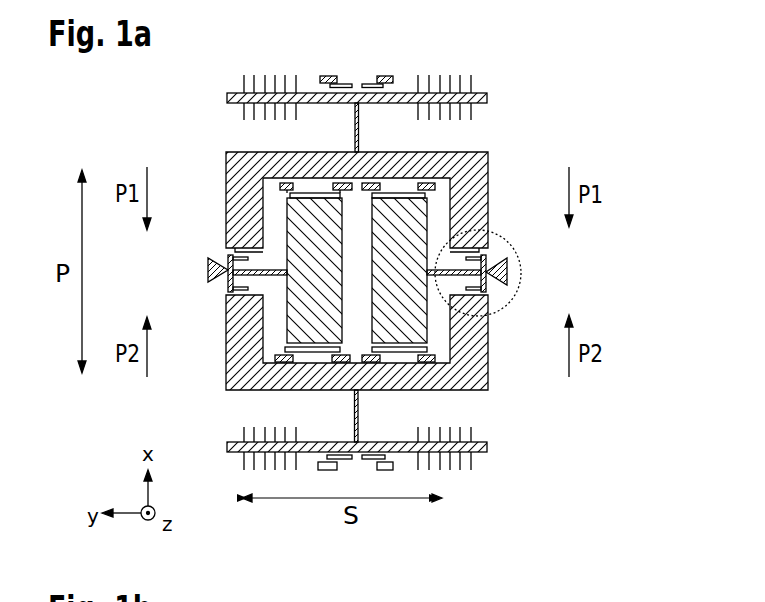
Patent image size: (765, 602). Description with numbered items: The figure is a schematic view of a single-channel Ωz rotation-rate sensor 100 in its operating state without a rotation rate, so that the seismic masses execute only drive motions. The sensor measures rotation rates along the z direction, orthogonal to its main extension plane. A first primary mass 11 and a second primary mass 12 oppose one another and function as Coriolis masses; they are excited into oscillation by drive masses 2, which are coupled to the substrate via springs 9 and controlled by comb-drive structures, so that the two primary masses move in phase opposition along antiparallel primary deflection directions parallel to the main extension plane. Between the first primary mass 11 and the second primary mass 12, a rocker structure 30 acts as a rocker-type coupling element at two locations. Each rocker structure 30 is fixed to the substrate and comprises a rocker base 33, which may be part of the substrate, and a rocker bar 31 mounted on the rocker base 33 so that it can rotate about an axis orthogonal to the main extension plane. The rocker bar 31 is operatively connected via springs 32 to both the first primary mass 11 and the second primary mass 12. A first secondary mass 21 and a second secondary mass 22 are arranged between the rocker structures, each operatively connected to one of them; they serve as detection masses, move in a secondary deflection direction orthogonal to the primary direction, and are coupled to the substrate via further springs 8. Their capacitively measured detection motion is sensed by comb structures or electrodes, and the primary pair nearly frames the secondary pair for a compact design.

The rotation-rate sensor 100 is at (560, 65).
The drive mass 2 is at (508, 448).
The further spring 8 is at (392, 186).
The spring 9 is at (334, 88).
The first primary mass 11 is at (236, 180).
The second primary mass 12 is at (236, 351).
The first secondary mass 21 is at (293, 213).
The second secondary mass 22 is at (422, 215).
The rocker structure 30 is at (515, 254).
The rocker bar 31 is at (230, 287).
The spring 32 is at (505, 286).
The rocker base 33 is at (208, 272).